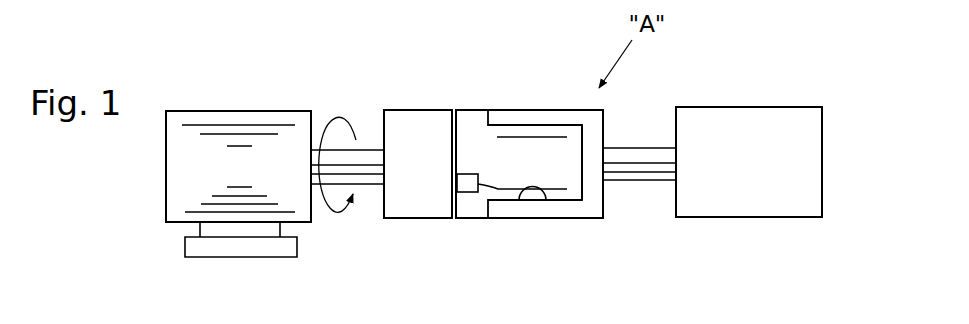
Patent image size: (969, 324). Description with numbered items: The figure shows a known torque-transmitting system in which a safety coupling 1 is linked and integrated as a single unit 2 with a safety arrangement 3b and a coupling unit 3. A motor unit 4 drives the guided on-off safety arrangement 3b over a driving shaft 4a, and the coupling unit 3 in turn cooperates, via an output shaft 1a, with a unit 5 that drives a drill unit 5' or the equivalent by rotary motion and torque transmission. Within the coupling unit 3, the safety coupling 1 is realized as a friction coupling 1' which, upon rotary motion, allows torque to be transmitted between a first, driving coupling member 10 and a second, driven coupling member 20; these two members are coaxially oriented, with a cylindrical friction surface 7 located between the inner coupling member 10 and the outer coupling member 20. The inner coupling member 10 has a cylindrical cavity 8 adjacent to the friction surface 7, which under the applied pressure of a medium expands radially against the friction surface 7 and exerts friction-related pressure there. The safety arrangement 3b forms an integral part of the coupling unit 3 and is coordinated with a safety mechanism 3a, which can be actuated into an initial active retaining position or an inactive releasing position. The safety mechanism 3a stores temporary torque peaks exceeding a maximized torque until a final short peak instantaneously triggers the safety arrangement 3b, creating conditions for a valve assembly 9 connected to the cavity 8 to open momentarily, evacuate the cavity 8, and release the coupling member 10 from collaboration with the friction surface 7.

The safety coupling 1 is at (529, 109).
The friction coupling 1' is at (535, 78).
The output shaft 1a is at (643, 147).
The single unit 2 is at (417, 93).
The coupling unit 3 is at (502, 210).
The safety mechanism 3a is at (398, 110).
The safety arrangement 3b is at (563, 202).
The motor unit 4 is at (218, 120).
The driving shaft 4a is at (366, 148).
The unit 5 is at (749, 134).
The drill unit 5' is at (835, 147).
The friction surface 7 is at (542, 200).
The cavity 8 is at (547, 137).
The valve assembly 9 is at (467, 195).
The driving coupling member 10 is at (465, 110).
The driven coupling member 20 is at (598, 205).